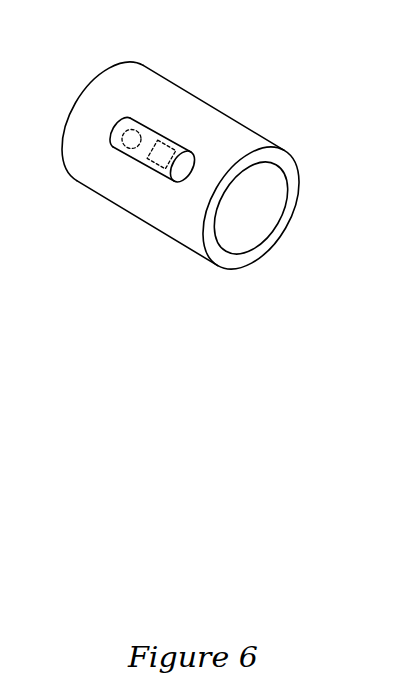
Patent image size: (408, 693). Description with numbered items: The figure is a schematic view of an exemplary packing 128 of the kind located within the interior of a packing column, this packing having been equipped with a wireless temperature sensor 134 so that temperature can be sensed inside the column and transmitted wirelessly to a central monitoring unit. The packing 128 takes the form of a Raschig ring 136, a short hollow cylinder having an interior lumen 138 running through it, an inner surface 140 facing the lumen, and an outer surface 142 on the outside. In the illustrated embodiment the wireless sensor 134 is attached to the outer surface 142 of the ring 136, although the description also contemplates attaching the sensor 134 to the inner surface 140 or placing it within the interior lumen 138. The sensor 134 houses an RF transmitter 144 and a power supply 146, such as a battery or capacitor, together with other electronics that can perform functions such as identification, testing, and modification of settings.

The packing 128 is at (259, 63).
The wireless temperature sensor 134 is at (138, 162).
The Raschig ring 136 is at (287, 158).
The interior lumen 138 is at (262, 210).
The inner surface 140 is at (237, 240).
The outer surface 142 is at (237, 137).
The RF transmitter 144 is at (158, 165).
The power supply 146 is at (130, 131).